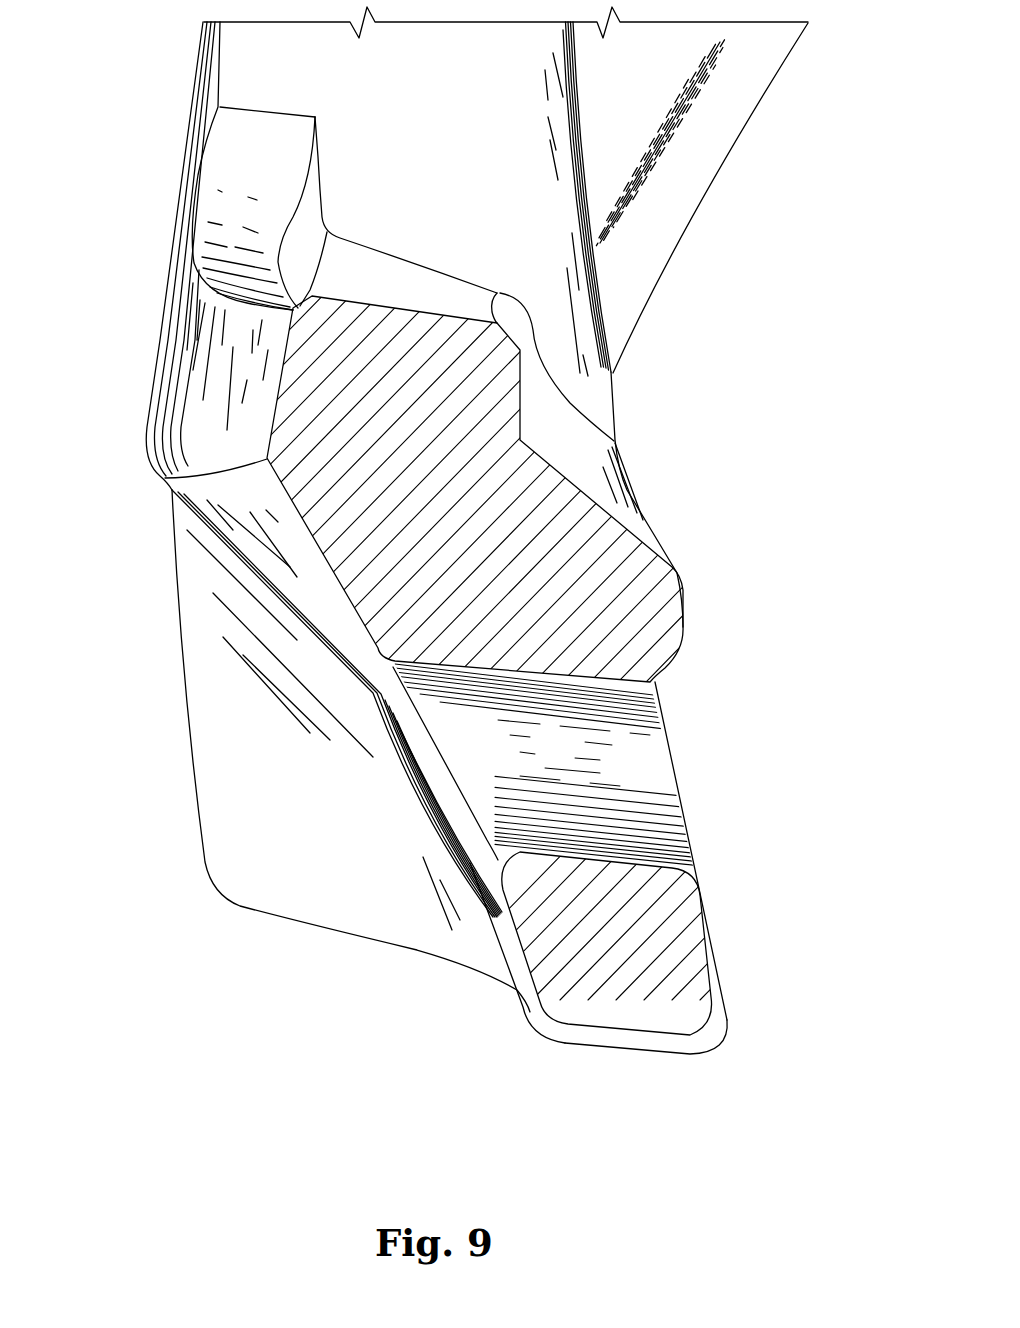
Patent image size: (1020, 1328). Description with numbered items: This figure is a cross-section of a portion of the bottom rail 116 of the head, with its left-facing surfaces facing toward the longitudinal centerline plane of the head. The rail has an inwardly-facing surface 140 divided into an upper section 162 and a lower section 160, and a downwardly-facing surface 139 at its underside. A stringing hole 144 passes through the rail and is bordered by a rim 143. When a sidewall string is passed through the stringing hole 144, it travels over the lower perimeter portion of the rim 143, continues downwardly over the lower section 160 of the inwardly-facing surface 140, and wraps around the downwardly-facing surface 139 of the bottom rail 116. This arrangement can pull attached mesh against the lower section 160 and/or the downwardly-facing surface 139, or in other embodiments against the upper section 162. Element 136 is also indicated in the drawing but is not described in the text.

The bottom rail 116 is at (78, 358).
The flange 136 is at (147, 449).
The downwardly-facing surface 139 is at (630, 1035).
The inwardly-facing surface 140 is at (493, 960).
The rim 143 is at (497, 856).
The stringing hole 144 is at (487, 763).
The lower section of inwardly-facing surface 160 is at (532, 1013).
The upper section of inwardly-facing surface 162 is at (318, 568).